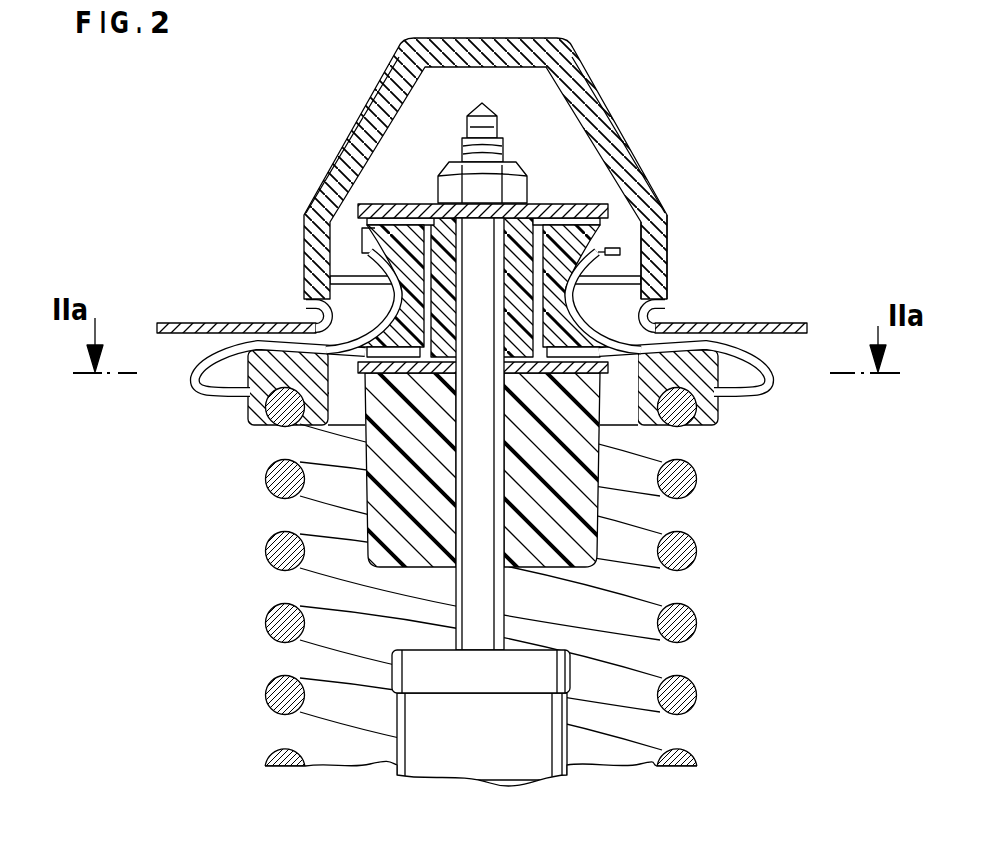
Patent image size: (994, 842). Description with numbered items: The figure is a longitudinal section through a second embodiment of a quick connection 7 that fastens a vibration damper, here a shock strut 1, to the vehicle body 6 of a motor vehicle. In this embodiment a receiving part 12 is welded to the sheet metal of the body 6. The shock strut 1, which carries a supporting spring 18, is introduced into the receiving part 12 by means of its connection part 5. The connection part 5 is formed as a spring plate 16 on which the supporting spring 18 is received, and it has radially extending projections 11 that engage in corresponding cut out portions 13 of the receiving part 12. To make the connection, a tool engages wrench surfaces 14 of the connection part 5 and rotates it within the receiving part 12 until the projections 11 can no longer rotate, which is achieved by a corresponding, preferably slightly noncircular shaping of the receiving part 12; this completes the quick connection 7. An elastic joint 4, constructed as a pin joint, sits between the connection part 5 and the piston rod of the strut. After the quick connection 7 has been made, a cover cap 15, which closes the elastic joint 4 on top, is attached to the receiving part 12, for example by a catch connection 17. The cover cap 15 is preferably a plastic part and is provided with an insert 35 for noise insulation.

The shock strut 1 is at (426, 603).
The elastic joint 4 is at (358, 231).
The connection part 5 is at (590, 315).
The vehicle body 6 is at (767, 327).
The quick connection 7 is at (188, 360).
The radially extending projections 11 is at (762, 396).
The receiving part 12 is at (753, 355).
The cut out portions 13 is at (224, 393).
The wrench surfaces 14 is at (620, 252).
The cover cap 15 is at (609, 118).
The spring plate 16 is at (300, 322).
The catch connection 17 is at (310, 294).
The supporting spring 18 is at (698, 550).
The insert 35 is at (631, 190).